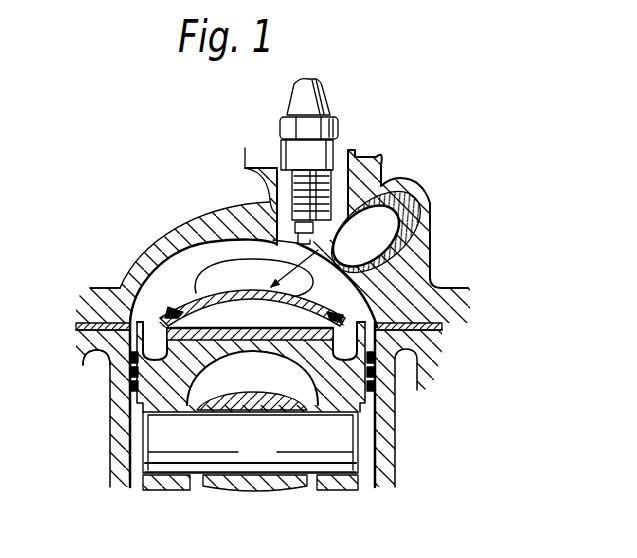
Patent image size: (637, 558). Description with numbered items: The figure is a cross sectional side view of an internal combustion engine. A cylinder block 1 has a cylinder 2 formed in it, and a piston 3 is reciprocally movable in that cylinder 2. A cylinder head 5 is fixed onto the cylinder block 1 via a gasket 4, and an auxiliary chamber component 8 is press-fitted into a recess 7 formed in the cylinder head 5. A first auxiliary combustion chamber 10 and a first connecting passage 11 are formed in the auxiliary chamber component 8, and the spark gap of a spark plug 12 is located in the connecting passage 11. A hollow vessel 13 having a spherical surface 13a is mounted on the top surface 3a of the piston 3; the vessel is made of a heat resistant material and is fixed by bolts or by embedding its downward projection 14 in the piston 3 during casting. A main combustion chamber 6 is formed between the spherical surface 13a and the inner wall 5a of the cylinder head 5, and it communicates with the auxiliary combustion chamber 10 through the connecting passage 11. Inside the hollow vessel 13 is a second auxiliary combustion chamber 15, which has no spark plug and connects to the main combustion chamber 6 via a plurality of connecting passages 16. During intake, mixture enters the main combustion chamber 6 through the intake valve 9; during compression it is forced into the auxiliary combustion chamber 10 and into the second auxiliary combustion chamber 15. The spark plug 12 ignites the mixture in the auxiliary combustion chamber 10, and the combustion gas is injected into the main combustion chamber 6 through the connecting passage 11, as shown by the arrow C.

The cylinder block 1 is at (392, 387).
The cylinder 2 is at (379, 468).
The piston 3 is at (392, 423).
The top surface of the piston 3a is at (212, 358).
The gasket 4 is at (440, 338).
The cylinder head 5 is at (430, 274).
The inner wall of the cylinder head 5a is at (200, 235).
The main combustion chamber 6 is at (340, 309).
The recess 7 is at (430, 250).
The auxiliary chamber component 8 is at (430, 207).
The intake valve 9 is at (203, 285).
The first auxiliary combustion chamber 10 is at (380, 243).
The first connecting passage 11 is at (248, 216).
The spark plug 12 is at (322, 99).
The hollow vessel 13 is at (85, 340).
The spherical surface 13a is at (127, 272).
The downward projection 14 is at (128, 368).
The second auxiliary combustion chamber 15 is at (266, 327).
The connecting passages 16 is at (85, 318).
The arrow C is at (272, 272).